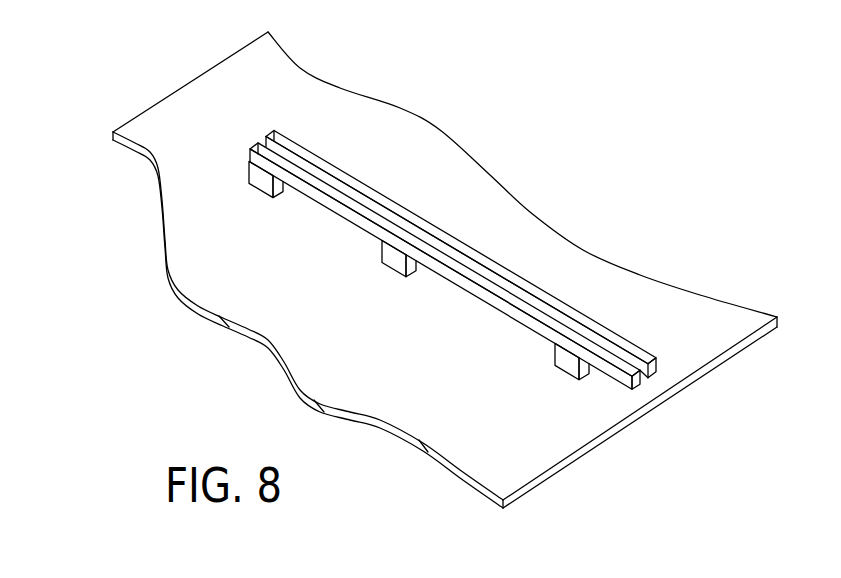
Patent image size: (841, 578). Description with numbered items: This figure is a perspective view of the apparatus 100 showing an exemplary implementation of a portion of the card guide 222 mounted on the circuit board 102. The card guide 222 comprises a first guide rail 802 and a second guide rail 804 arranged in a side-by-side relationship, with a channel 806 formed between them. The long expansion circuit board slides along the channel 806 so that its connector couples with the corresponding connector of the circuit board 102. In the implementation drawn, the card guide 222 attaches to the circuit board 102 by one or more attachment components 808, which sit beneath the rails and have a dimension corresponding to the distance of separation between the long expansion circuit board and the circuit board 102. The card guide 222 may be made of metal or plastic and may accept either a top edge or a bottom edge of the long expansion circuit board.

The apparatus 100 is at (100, 55).
The circuit board 102 is at (155, 272).
The card guide 222 is at (518, 294).
The first guide rail 802 is at (638, 386).
The second guide rail 804 is at (660, 367).
The channel 806 is at (645, 380).
The attachment components 808 is at (388, 268).